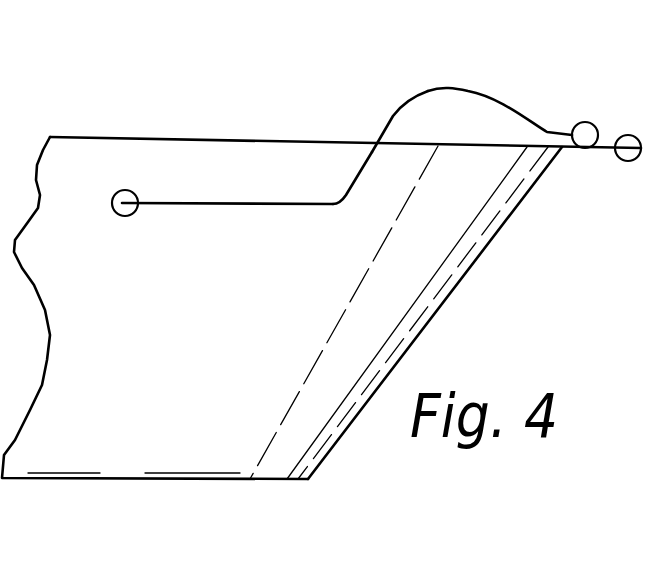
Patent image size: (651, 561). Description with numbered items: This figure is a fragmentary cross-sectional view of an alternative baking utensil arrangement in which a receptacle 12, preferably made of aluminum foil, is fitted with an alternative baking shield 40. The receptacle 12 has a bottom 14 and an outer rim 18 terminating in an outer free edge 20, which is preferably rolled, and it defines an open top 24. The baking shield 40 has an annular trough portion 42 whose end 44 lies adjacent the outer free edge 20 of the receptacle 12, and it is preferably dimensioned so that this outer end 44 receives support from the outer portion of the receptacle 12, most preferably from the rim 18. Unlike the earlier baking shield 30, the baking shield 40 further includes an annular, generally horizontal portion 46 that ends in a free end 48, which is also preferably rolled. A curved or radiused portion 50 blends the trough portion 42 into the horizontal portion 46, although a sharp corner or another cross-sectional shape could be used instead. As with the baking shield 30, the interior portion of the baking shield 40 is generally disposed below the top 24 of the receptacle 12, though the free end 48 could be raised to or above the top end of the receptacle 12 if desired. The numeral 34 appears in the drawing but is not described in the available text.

The receptacle 12 is at (463, 284).
The bottom 14 is at (110, 477).
The outer rim 18 is at (563, 150).
The outer free edge 20 is at (627, 135).
The open top 24 is at (266, 140).
The baking shield 30 is at (195, 560).
The lower member 34 is at (532, 555).
The baking shield 40 is at (422, 92).
The annular trough portion 42 is at (482, 90).
The end 44 is at (580, 122).
The annular, generally horizontal portion 46 is at (225, 210).
The free end 48 is at (118, 215).
The curved or radiused portion 50 is at (335, 215).